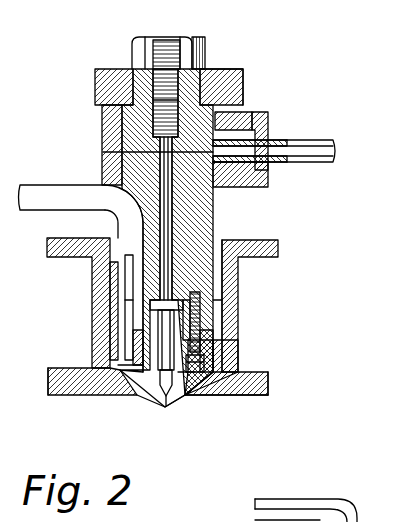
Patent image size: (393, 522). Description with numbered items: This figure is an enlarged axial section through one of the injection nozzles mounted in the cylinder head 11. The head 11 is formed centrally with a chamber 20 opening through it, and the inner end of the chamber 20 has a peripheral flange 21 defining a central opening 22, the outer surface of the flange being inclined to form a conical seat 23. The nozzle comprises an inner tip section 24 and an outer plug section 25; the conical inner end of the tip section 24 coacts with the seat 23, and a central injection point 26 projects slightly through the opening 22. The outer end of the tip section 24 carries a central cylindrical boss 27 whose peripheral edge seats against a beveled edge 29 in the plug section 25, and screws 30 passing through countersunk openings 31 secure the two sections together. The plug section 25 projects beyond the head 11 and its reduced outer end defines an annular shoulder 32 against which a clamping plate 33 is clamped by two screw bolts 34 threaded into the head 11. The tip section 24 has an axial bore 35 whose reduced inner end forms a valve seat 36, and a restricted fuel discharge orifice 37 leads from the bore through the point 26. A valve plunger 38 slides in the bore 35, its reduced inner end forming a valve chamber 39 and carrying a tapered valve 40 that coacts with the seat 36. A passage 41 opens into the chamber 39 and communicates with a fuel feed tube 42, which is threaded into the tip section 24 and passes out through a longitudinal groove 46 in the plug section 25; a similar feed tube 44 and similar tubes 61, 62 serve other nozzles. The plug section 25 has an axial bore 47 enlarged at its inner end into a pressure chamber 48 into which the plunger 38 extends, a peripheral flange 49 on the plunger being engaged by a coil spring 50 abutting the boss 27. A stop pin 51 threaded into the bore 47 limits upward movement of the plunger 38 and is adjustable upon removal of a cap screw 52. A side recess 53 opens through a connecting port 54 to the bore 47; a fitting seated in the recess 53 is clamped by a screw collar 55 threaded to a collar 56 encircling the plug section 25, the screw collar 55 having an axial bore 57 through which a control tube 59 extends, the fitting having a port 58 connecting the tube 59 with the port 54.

The head 11 is at (269, 380).
The chamber 20 is at (240, 268).
The peripheral flange 21 is at (232, 392).
The central opening 22 is at (134, 402).
The conical seat 23 is at (205, 394).
The inner tip section 24 is at (110, 350).
The outer plug section 25 is at (218, 207).
The central injection point 26 is at (160, 385).
The central cylindrical boss 27 is at (195, 320).
The beveled edge 29 is at (200, 305).
The screws 30 is at (222, 358).
The countersunk openings 31 is at (208, 395).
The annular shoulder 32 is at (128, 80).
The clamping plate 33 is at (243, 88).
The screw bolts 34 is at (139, 42).
The axial bore 35 is at (213, 345).
The valve seat 36 is at (172, 398).
The fuel discharge orifice 37 is at (165, 396).
The valve plunger 38 is at (252, 395).
The valve chamber 39 is at (188, 398).
The tapered valve 40 is at (152, 392).
The passage 41 is at (128, 396).
The fuel feed tube 42 is at (40, 200).
The feed tube 44 is at (354, 500).
The longitudinal groove 46 is at (126, 206).
The axial bore 47 is at (262, 232).
The pressure chamber 48 is at (126, 310).
The peripheral flange 49 is at (114, 292).
The coil spring 50 is at (136, 320).
The stop pin 51 is at (175, 213).
The cap screw 52 is at (205, 46).
The recess 53 is at (226, 73).
The connecting port 54 is at (103, 152).
The screw collar 55 is at (252, 113).
The collar 56 is at (245, 187).
The axial bore 57 is at (270, 130).
The port 58 is at (105, 170).
The control tube 59 is at (325, 140).
The tube 61 is at (320, 504).
The tube 62 is at (296, 515).